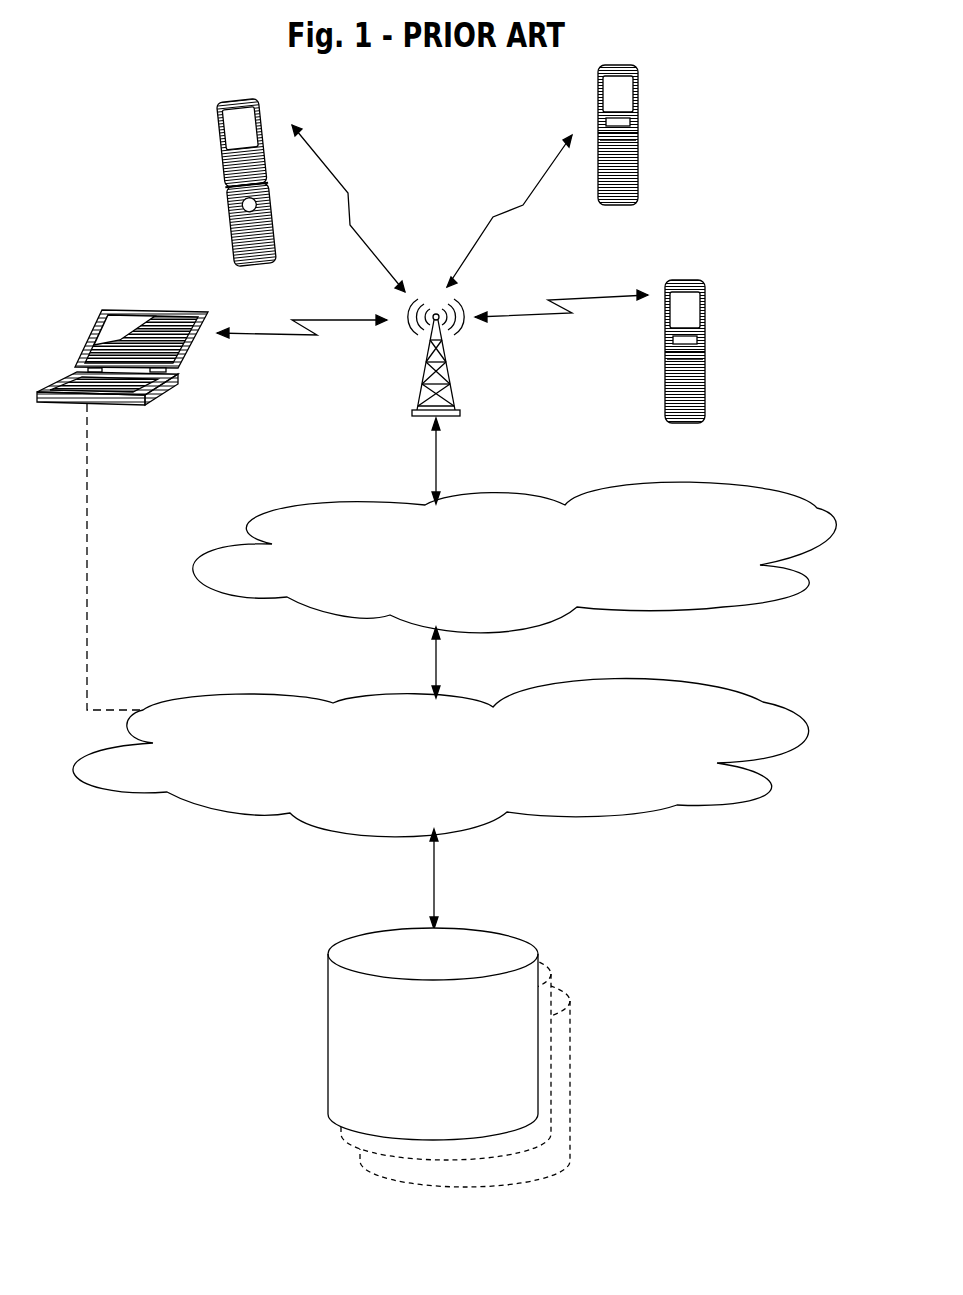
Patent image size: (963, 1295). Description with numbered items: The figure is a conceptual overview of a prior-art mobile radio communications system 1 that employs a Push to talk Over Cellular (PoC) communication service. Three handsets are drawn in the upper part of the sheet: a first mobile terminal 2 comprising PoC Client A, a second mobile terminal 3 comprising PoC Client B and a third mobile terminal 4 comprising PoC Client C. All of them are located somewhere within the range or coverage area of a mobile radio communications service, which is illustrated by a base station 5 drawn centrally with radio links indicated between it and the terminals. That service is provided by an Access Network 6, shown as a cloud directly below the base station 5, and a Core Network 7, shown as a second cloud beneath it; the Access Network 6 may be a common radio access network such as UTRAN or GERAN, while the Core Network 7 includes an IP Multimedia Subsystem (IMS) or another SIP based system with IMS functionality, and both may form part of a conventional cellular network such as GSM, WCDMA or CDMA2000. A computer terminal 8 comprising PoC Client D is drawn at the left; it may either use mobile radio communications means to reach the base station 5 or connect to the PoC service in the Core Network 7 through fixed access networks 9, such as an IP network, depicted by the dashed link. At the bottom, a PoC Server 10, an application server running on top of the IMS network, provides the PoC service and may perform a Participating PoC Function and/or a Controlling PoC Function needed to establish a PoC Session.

The mobile radio communications system 1 is at (770, 147).
The first mobile terminal 2 is at (217, 137).
The second mobile terminal 3 is at (645, 82).
The third mobile terminal 4 is at (712, 296).
The base station 5 is at (462, 412).
The Access Network 6 is at (817, 508).
The Core Network 7 is at (763, 702).
The computer terminal 8 is at (125, 308).
The fixed access networks 9 is at (86, 645).
The PoC Server 10 is at (538, 972).